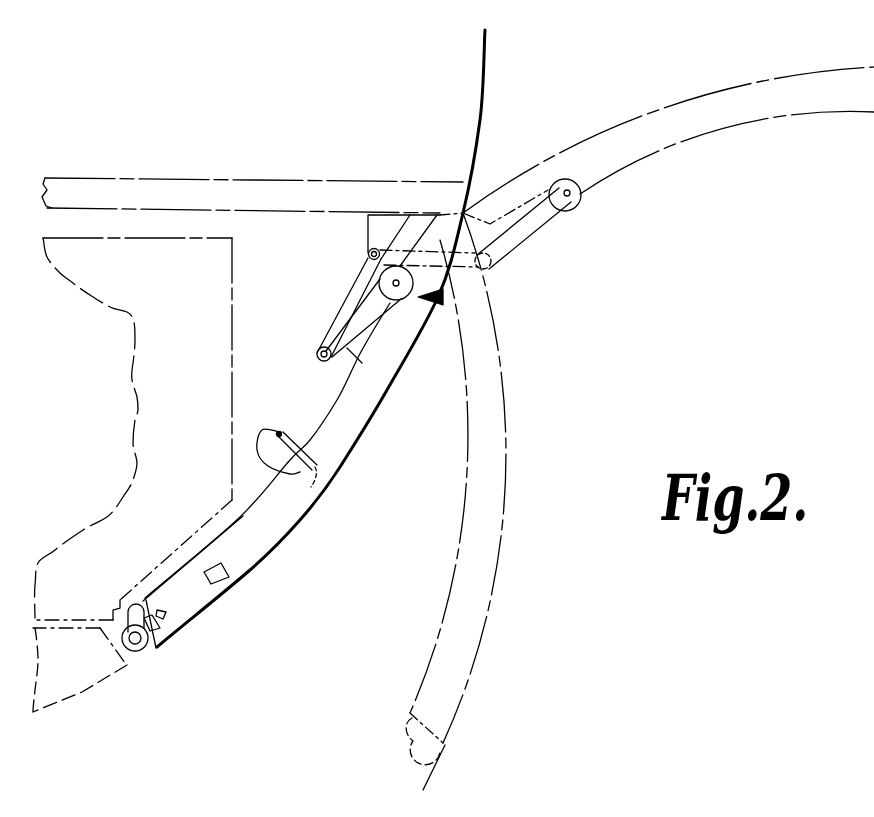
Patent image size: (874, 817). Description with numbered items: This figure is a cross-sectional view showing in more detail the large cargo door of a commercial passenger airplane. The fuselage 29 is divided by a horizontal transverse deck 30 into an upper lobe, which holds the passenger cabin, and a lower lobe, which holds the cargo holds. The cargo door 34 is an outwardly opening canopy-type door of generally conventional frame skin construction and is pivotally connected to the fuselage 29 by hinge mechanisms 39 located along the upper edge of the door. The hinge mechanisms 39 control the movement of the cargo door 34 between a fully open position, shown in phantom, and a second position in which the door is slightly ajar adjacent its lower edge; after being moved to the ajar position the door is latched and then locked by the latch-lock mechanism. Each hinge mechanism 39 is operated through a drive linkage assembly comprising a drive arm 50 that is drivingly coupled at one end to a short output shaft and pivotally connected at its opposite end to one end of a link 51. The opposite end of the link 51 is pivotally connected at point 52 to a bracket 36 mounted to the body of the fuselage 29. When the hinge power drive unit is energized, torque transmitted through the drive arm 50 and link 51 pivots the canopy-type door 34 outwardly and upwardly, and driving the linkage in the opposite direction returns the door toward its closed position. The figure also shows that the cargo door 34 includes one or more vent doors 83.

The fuselage 29 is at (487, 73).
The horizontal transverse deck 30 is at (215, 180).
The cargo door 34 is at (747, 122).
The bracket 36 is at (390, 217).
The hinge mechanism 39 is at (443, 297).
The drive arm 50 is at (360, 322).
The link 51 is at (350, 298).
The pivot point 52 is at (368, 252).
The vent door 83 is at (298, 440).